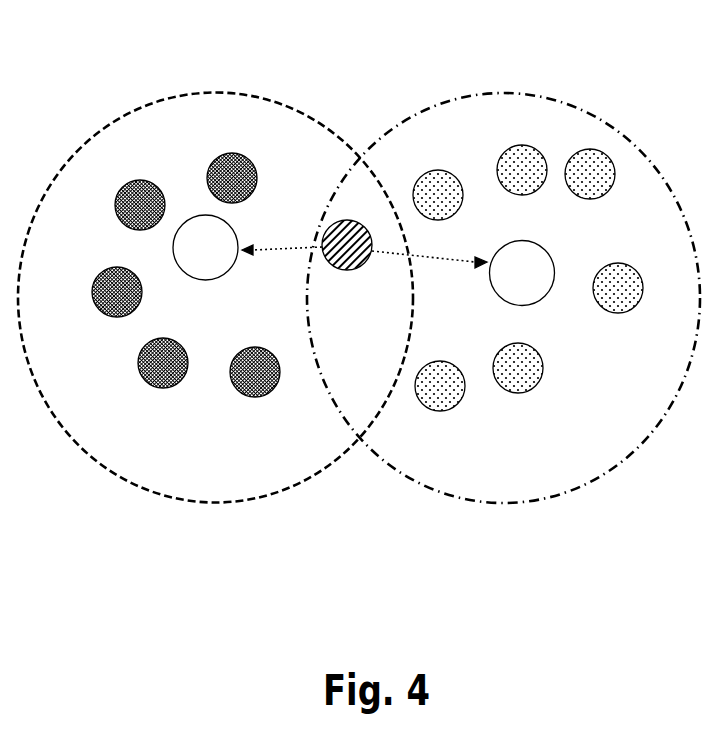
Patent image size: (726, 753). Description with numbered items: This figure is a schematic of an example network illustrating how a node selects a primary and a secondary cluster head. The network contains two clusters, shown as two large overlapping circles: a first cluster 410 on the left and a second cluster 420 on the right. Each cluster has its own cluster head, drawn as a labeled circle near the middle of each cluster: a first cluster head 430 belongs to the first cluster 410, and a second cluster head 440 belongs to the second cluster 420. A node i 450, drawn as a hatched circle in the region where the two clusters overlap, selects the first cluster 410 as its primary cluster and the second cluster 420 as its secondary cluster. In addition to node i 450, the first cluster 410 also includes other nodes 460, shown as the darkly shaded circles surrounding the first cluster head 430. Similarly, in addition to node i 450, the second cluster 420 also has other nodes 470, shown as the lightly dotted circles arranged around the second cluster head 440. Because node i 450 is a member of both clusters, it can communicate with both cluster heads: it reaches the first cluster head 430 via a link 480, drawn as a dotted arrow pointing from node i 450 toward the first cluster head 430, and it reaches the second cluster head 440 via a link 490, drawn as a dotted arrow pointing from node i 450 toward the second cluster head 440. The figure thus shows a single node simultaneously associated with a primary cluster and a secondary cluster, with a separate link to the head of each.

The cluster C1 410 is at (115, 115).
The cluster C2 420 is at (665, 180).
The cluster head CH1 430 is at (218, 277).
The cluster head CH2 440 is at (535, 303).
The node i 450 is at (347, 270).
The other nodes 460 is at (207, 167).
The other nodes 470 is at (622, 264).
The link 480 is at (278, 245).
The link 490 is at (407, 240).